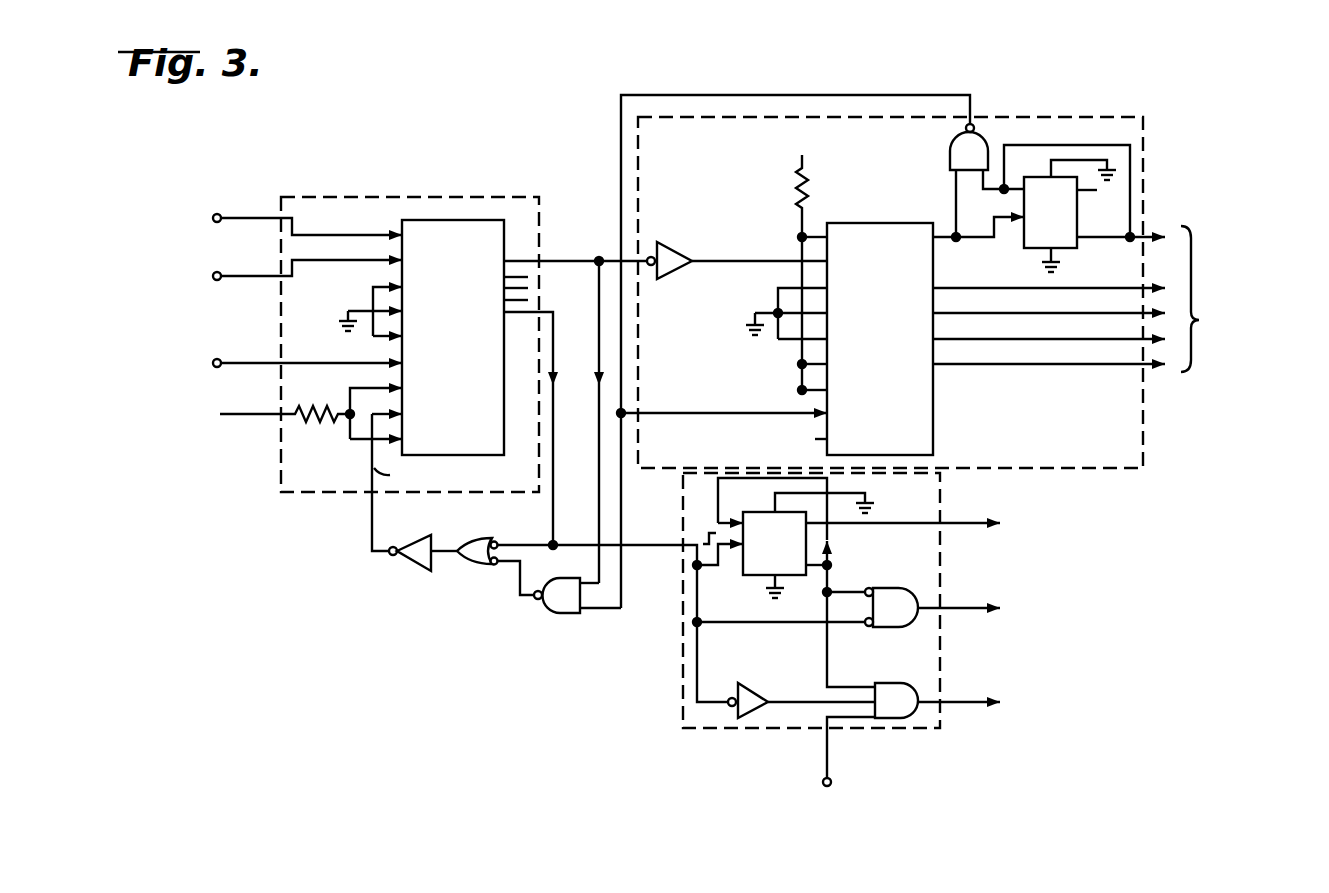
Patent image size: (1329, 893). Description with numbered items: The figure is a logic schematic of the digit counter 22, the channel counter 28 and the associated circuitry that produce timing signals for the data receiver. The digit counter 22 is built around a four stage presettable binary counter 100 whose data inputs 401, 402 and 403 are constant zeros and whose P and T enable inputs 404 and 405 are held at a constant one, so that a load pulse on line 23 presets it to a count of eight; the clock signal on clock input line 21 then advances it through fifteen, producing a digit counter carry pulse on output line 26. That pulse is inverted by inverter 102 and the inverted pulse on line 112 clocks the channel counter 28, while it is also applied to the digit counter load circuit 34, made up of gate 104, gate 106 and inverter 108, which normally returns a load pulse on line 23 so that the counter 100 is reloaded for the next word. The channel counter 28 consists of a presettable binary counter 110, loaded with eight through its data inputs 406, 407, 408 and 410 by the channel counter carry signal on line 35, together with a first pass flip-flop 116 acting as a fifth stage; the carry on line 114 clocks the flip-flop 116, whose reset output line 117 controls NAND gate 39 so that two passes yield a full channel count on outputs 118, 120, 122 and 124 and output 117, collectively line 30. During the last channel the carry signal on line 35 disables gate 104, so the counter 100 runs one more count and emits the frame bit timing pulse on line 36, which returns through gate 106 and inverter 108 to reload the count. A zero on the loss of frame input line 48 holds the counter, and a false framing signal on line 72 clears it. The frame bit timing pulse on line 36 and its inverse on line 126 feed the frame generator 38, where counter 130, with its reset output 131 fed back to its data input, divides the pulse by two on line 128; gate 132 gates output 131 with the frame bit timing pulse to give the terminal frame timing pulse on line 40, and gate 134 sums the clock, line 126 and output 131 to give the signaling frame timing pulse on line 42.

The clock input line 21 is at (230, 217).
The digit counter 22 is at (414, 192).
The load line 23 is at (371, 528).
The digit counter carry output line 26 is at (518, 259).
The channel counter 28 is at (1054, 112).
The channel count line 30 is at (1200, 308).
The digit counter load circuit 34 is at (464, 598).
The channel counter carry line 35 is at (611, 612).
The frame bit timing pulse line 36 is at (530, 316).
The frame generator 38 is at (702, 733).
The NAND gate 39 is at (950, 162).
The terminal frame timing pulse line 40 is at (979, 603).
The signaling frame timing pulse line 42 is at (979, 700).
The loss of frame input line 48 is at (243, 349).
The false framing signal line 72 is at (240, 261).
The presettable binary counter 100 is at (453, 337).
The inverter 102 is at (668, 244).
The gate 104 is at (549, 615).
The gate 106 is at (482, 538).
The inverter 108 is at (410, 568).
The presettable binary counter 110 is at (874, 339).
The inverted digit counter carry line 112 is at (718, 260).
The carry output line 114 is at (972, 240).
The first pass flip-flop 116 is at (1067, 208).
The reset output line 117 is at (1145, 233).
The counter output 118 is at (1131, 286).
The counter output 120 is at (1117, 311).
The counter output 122 is at (1114, 337).
The counter output 124 is at (1111, 362).
The inverse frame bit timing pulse line 126 is at (773, 706).
The frame bit timing pulse divided-by-2 output line 128 is at (951, 521).
The counter 130 is at (757, 510).
The reset output 131 is at (826, 660).
The gate 132 is at (889, 588).
The gate 134 is at (897, 683).
The data input 401 is at (372, 296).
The data input 402 is at (375, 316).
The data input 403 is at (372, 337).
The P enable input 404 is at (350, 390).
The T enable input 405 is at (350, 441).
The data input 406 is at (778, 288).
The data input 407 is at (777, 311).
The data input 408 is at (776, 342).
The data input 410 is at (801, 381).